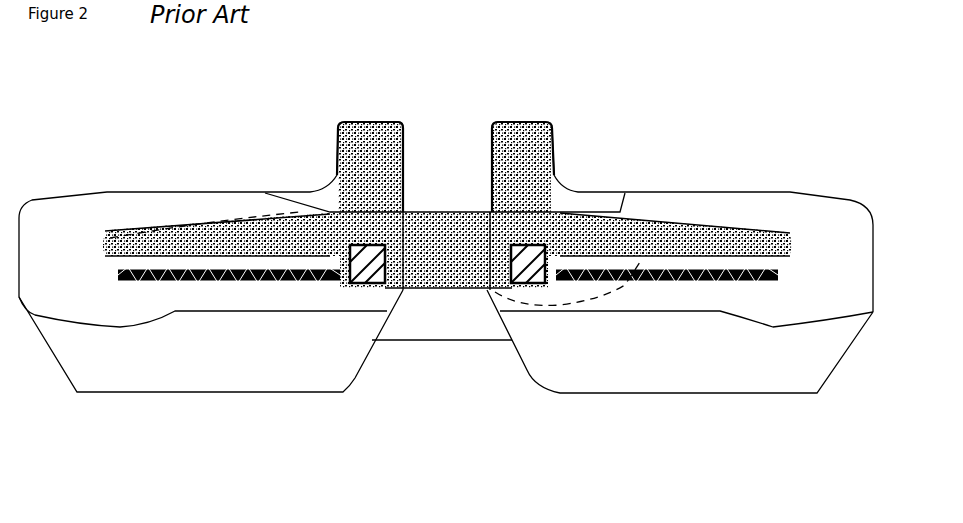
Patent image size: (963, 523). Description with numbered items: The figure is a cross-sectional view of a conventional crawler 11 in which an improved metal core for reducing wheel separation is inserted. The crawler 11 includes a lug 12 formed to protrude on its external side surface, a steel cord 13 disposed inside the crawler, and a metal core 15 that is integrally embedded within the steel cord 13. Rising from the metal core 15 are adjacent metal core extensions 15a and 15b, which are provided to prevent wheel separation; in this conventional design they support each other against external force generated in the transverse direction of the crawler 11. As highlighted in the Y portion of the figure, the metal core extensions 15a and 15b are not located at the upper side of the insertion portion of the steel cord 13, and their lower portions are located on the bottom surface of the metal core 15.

The crawler 11 is at (203, 167).
The lug 12 is at (173, 368).
The steel cord 13 is at (632, 286).
The metal core 15 is at (433, 262).
The metal core extension 15a is at (330, 187).
The metal core extension 15b is at (560, 185).
The Y portion Y is at (603, 232).